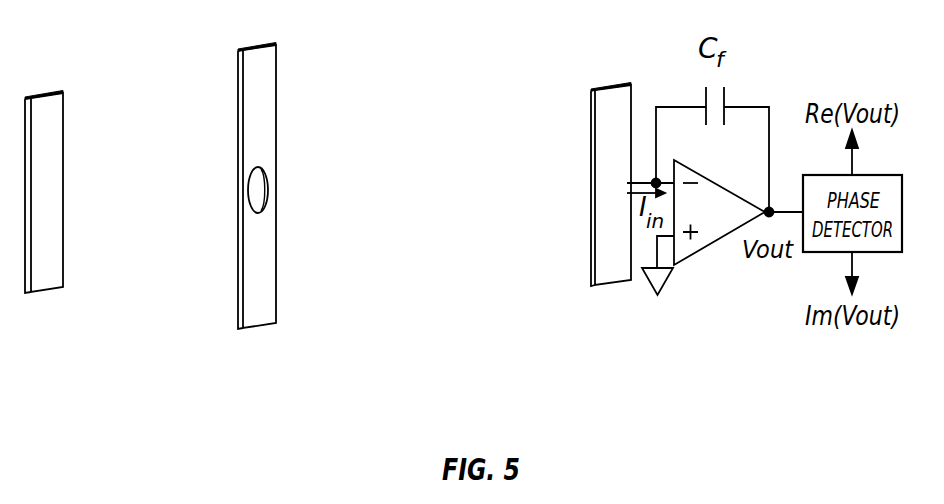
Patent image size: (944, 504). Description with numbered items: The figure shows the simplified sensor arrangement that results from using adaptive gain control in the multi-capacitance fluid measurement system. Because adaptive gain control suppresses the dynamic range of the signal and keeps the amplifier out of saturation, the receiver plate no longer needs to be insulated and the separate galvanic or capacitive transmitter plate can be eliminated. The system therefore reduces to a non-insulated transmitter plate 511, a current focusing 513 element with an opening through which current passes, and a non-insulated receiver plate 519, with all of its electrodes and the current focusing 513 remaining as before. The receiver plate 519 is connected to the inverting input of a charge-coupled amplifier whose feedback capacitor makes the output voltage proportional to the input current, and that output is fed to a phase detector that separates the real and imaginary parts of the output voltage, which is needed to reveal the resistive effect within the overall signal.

The non-insulated transmitter plate 511 is at (38, 292).
The current focusing 513 is at (255, 328).
The non-insulated receiver plate 519 is at (618, 283).